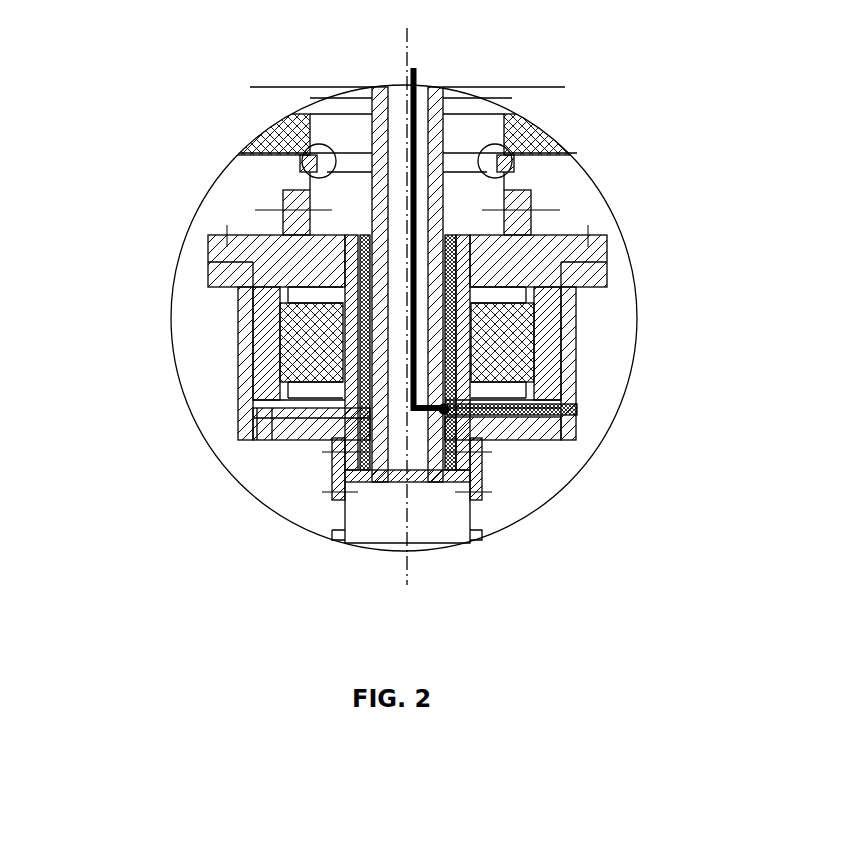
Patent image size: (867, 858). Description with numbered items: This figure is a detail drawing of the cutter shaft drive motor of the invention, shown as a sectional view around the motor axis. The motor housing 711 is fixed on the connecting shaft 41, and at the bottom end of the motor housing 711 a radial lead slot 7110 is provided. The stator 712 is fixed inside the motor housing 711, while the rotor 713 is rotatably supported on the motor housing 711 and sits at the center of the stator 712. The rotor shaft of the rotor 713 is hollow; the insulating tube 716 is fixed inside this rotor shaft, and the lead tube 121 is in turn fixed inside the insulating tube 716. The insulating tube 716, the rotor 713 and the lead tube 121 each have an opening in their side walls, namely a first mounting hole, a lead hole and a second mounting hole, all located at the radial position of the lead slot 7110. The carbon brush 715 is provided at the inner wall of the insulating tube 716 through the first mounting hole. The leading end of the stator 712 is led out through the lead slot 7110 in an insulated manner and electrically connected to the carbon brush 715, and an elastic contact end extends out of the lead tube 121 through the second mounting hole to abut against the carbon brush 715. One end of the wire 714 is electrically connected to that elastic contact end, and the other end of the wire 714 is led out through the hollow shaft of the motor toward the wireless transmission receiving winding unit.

The connecting shaft 41 is at (342, 132).
The lead tube 121 is at (442, 192).
The wire 714 is at (410, 107).
The insulating tube 716 is at (285, 232).
The motor housing 711 is at (582, 210).
The stator 712 is at (577, 375).
The rotor 713 is at (340, 410).
The carbon brush 715 is at (478, 436).
The lead slot 7110 is at (538, 440).